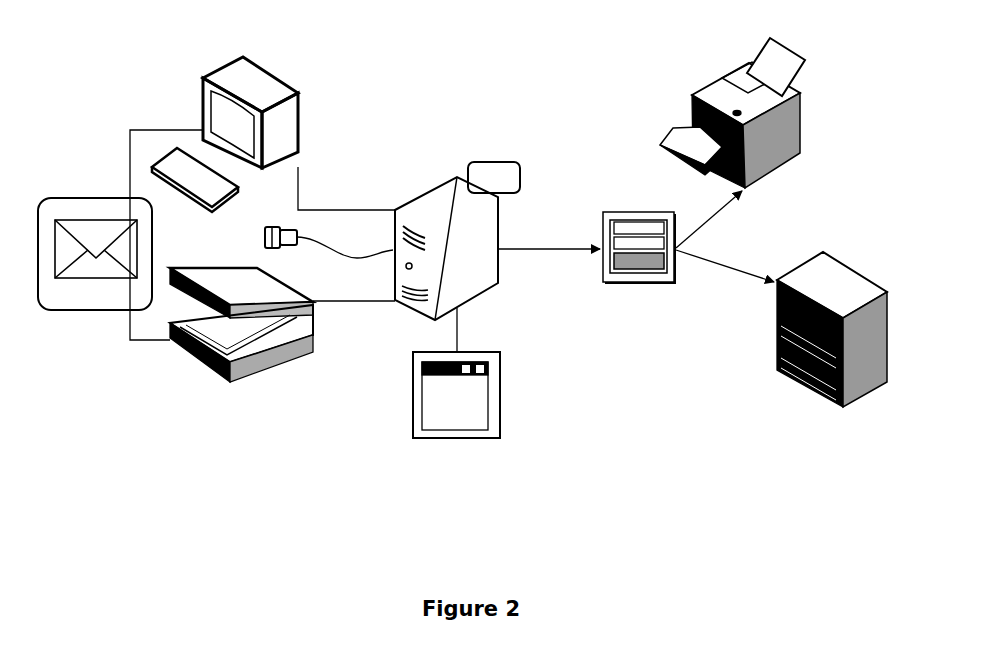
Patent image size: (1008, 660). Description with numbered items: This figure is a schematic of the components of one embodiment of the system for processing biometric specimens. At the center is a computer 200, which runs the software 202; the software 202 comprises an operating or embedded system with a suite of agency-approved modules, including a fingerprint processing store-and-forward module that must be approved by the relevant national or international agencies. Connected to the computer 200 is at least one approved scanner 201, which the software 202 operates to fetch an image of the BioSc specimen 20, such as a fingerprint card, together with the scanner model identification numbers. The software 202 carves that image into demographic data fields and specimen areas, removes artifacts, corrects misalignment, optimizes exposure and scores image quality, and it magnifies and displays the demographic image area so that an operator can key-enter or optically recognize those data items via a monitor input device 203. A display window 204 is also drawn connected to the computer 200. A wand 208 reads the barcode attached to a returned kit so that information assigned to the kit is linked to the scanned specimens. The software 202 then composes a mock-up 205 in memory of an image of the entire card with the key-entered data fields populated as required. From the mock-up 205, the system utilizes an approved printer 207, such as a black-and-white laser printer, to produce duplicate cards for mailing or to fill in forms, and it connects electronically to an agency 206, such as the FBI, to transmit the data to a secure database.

The BioSc specimen 20 is at (103, 193).
The computer 200 is at (443, 182).
The approved scanner 201 is at (184, 362).
The software 202 is at (497, 160).
The monitor input device 203 is at (267, 69).
The software application window 204 is at (411, 411).
The mock-up 205 is at (616, 210).
The agency 206 is at (773, 370).
The approved printer 207 is at (721, 80).
The wand 208 is at (263, 233).